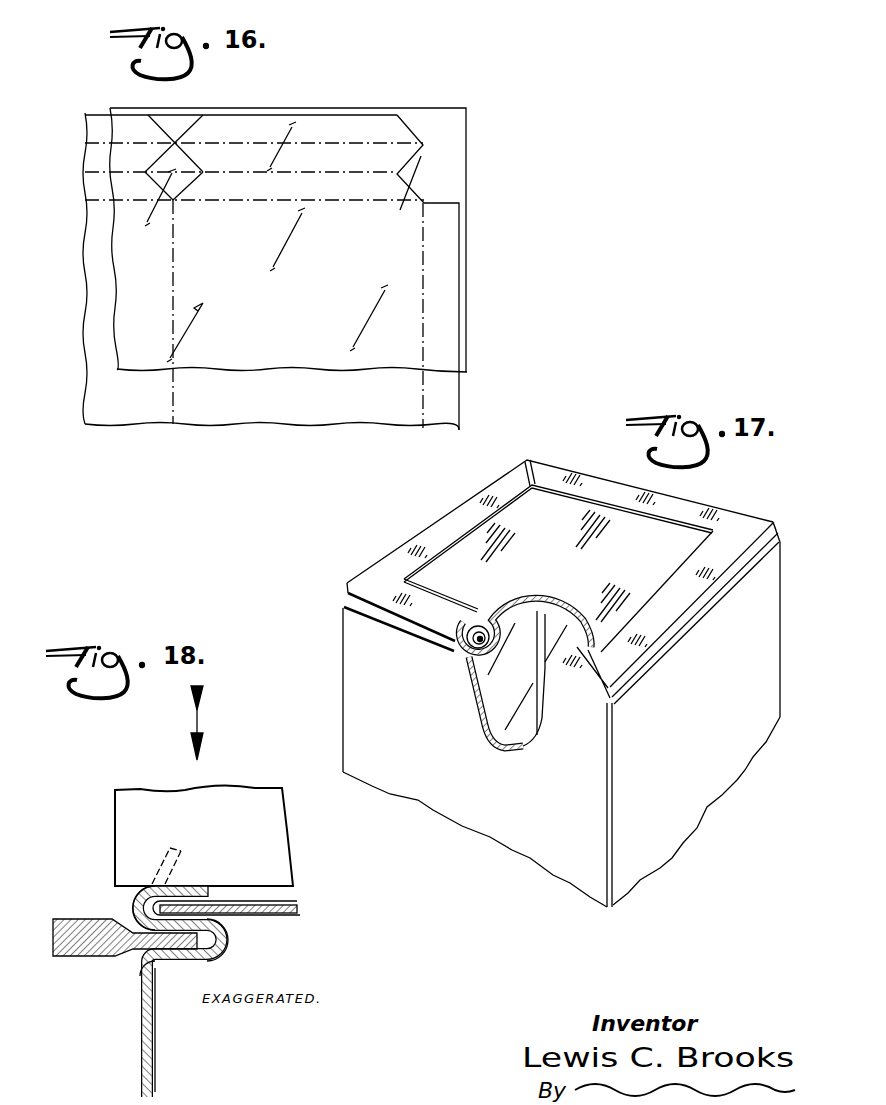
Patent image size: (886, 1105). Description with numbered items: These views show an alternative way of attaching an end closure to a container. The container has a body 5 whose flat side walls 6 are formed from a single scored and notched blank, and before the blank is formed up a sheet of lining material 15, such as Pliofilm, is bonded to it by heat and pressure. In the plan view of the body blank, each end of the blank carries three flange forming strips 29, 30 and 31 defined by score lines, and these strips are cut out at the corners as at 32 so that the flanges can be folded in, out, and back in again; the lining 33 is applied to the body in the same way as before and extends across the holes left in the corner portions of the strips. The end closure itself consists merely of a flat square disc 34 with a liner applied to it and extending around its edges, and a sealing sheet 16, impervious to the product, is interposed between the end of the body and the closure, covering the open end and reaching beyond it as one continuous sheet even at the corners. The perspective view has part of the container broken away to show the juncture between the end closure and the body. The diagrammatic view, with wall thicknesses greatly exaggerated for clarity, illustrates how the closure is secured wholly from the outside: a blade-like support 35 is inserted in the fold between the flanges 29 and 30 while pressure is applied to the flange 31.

In FIG. 17, the body 5 is at (335, 642).
In FIG. 16, the side walls 6 is at (290, 403).
In FIG. 17, the side walls 6 is at (560, 755).
In FIG. 18, the side walls 6 is at (158, 1042).
In FIG. 17, the lining material sheet 15 is at (474, 708).
In FIG. 18, the lining material sheet 15 is at (157, 1058).
In FIG. 17, the sealing sheet 16 is at (563, 607).
In FIG. 18, the sealing sheet 16 is at (250, 915).
In FIG. 16, the flange forming strip 29 is at (375, 189).
In FIG. 18, the flange forming strip 29 is at (193, 957).
In FIG. 16, the flange forming strip 30 is at (360, 158).
In FIG. 18, the flange forming strip 30 is at (209, 928).
In FIG. 16, the flange forming strip 31 is at (388, 115).
In FIG. 17, the flange forming strip 31 is at (688, 504).
In FIG. 18, the flange forming strip 31 is at (203, 881).
In FIG. 16, the corner cut-out 32 is at (412, 163).
In FIG. 16, the lining 33 is at (461, 260).
In FIG. 17, the flat square disc 34 is at (663, 560).
In FIG. 18, the flat square disc 34 is at (284, 917).
In FIG. 18, the blade-like support 35 is at (138, 955).